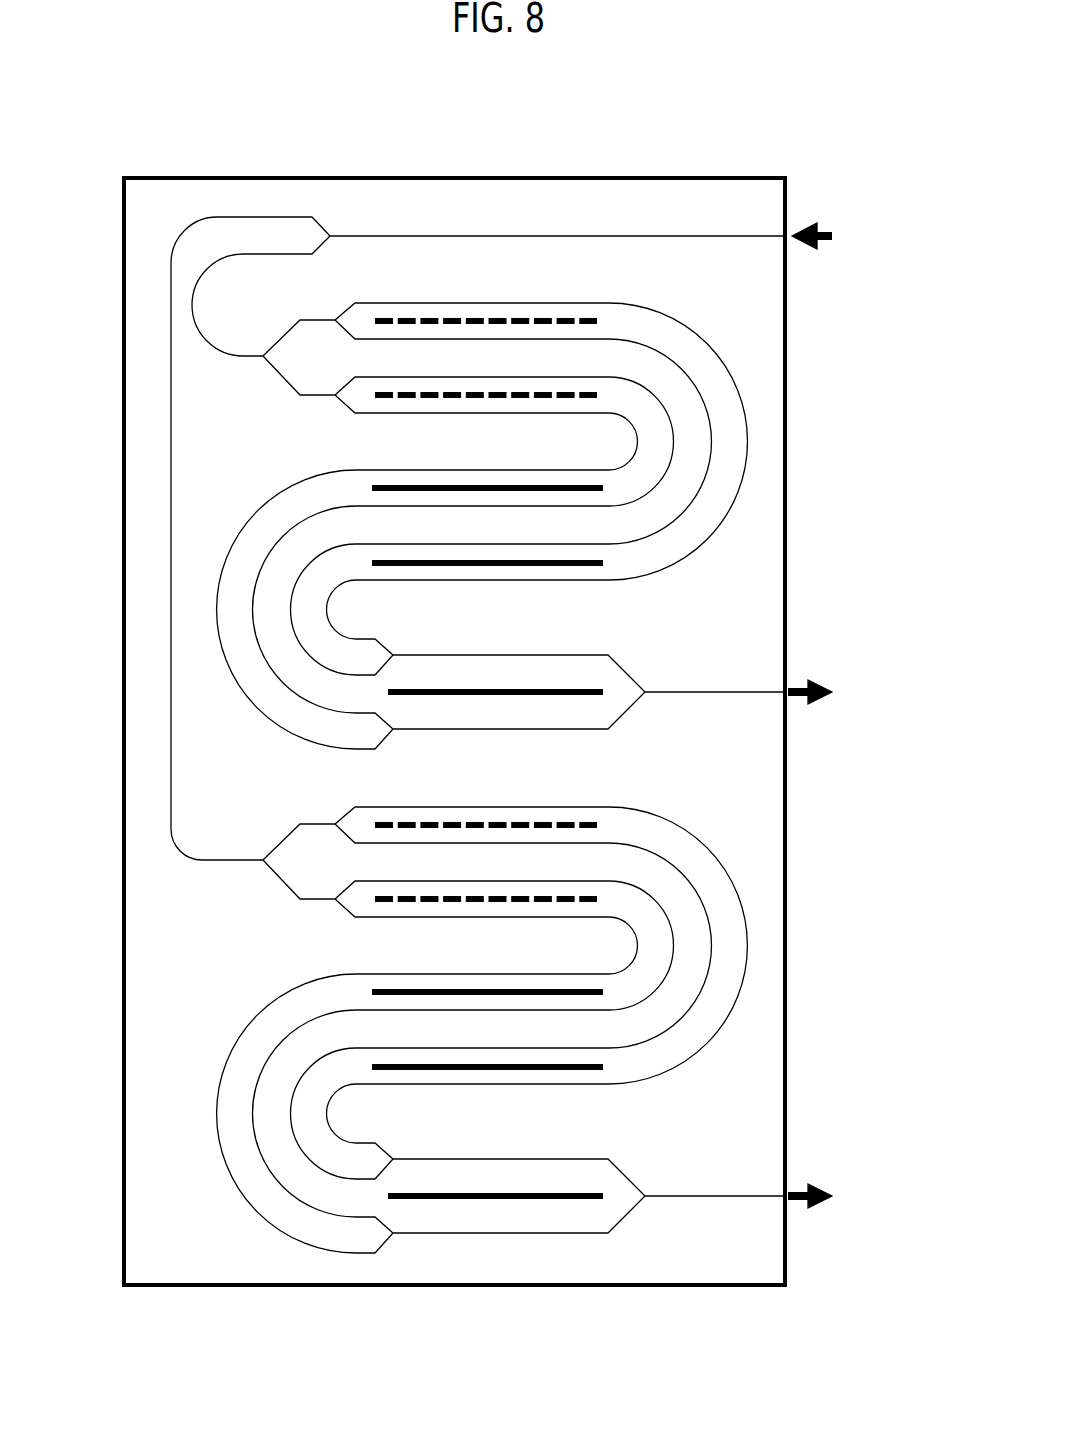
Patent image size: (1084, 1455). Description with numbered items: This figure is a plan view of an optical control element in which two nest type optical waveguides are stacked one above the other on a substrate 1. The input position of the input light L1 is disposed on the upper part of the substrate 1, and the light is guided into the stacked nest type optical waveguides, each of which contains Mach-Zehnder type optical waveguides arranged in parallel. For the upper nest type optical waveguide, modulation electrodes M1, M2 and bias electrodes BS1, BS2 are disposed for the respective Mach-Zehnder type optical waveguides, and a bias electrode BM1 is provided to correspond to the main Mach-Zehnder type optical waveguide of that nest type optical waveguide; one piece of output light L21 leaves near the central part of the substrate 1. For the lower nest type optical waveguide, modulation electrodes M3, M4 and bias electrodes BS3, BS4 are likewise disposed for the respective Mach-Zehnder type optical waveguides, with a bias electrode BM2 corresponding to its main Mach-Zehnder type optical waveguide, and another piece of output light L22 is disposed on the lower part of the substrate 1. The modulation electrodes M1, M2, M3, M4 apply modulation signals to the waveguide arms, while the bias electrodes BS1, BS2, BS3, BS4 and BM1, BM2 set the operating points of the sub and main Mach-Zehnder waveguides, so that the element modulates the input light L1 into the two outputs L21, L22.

The substrate 1 is at (672, 178).
The input light L1 is at (755, 237).
The output light L21 is at (763, 694).
The output light L22 is at (765, 1199).
The modulation electrode M1 is at (403, 318).
The modulation electrode M2 is at (497, 392).
The modulation electrode M3 is at (430, 821).
The modulation electrode M4 is at (428, 902).
The bias electrode BS1 is at (543, 566).
The bias electrode BS2 is at (540, 486).
The bias electrode BS3 is at (541, 1070).
The bias electrode BS4 is at (540, 989).
The bias electrode BM1 is at (543, 695).
The bias electrode BM2 is at (497, 1201).